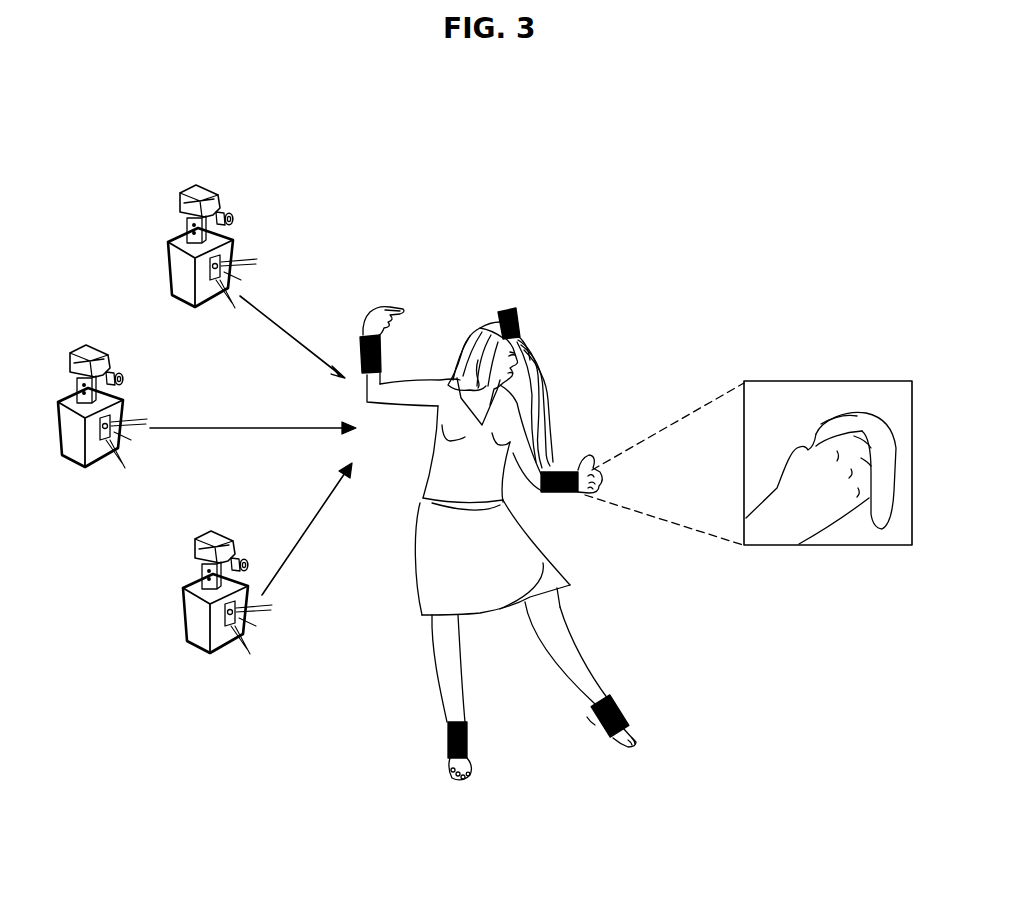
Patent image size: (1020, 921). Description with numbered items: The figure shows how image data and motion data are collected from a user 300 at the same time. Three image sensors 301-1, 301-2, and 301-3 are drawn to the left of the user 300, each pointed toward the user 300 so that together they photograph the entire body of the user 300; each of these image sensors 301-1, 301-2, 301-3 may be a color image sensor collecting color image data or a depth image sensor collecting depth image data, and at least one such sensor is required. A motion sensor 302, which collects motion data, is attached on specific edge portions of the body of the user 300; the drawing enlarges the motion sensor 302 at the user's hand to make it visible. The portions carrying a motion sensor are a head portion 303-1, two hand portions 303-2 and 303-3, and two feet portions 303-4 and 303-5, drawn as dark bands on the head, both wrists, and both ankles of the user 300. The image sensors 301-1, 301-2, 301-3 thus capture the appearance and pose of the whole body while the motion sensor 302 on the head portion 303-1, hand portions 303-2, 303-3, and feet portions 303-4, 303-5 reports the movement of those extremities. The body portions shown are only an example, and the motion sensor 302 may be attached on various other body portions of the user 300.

The user 300 is at (542, 565).
The image sensor 301-1 is at (212, 190).
The image sensor 301-2 is at (102, 351).
The image sensor 301-3 is at (222, 535).
The motion sensor 302 is at (828, 381).
The head portion 303-1 is at (517, 312).
The hand portion 303-2 is at (563, 472).
The hand portion 303-3 is at (360, 337).
The foot portion 303-4 is at (449, 740).
The foot portion 303-5 is at (620, 712).